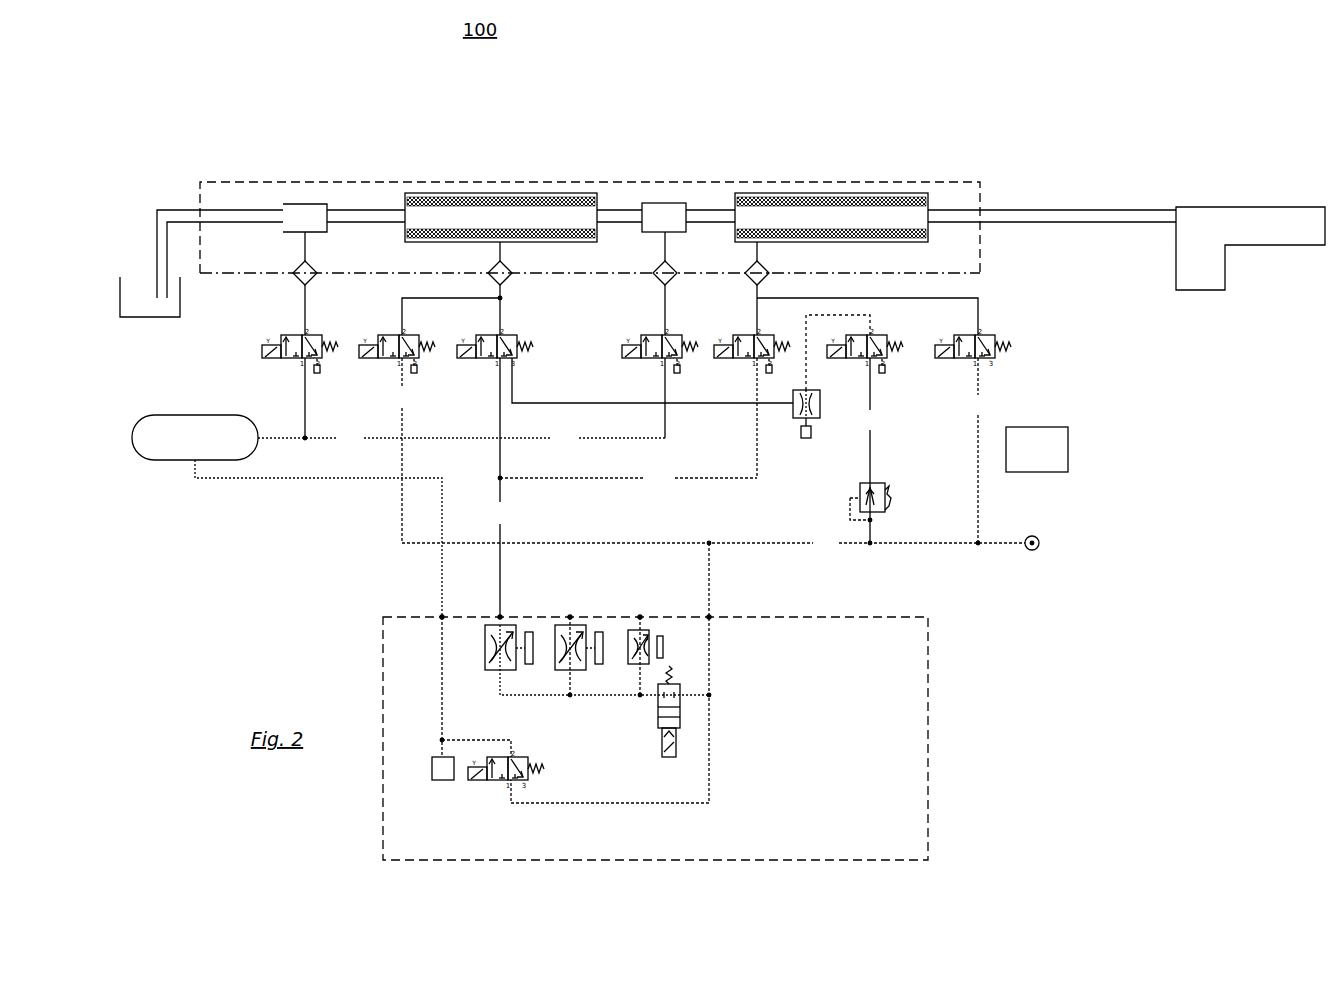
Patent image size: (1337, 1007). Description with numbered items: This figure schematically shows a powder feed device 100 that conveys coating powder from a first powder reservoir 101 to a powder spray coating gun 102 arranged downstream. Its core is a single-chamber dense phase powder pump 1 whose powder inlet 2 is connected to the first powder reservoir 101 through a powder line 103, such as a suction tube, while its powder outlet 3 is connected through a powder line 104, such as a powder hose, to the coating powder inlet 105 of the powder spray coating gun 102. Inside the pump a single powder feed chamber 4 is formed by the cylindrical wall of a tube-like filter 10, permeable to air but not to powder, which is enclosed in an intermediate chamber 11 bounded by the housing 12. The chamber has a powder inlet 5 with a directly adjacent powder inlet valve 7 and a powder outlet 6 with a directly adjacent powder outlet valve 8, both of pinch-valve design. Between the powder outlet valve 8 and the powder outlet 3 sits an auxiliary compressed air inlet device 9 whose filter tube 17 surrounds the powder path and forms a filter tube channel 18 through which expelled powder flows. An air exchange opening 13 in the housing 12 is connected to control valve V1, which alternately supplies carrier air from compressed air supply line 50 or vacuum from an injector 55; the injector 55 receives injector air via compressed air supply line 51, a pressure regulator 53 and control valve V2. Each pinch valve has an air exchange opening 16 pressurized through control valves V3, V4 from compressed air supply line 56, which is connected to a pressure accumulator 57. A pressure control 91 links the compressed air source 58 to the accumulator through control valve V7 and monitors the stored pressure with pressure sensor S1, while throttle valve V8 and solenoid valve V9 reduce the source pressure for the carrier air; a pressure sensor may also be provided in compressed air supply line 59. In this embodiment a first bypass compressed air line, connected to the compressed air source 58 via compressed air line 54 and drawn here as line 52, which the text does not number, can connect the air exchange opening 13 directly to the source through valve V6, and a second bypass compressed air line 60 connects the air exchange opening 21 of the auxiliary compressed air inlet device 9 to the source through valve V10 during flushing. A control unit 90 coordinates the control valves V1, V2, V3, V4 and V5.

The powder feed device 100 is at (590, 227).
The dense phase powder pump 1 is at (237, 182).
The powder inlet 2 is at (196, 210).
The powder line 103 is at (153, 232).
The first powder reservoir 101 is at (137, 293).
The powder inlet valve 7 is at (305, 205).
The powder inlet 5 is at (396, 212).
The intermediate chamber 11 is at (478, 175).
The housing 12 is at (482, 194).
The powder feed chamber 4 is at (478, 157).
The tube-like filter 10 is at (540, 200).
The powder outlet 6 is at (607, 210).
The powder outlet valve 8 is at (672, 205).
The auxiliary compressed air inlet device 9 is at (831, 175).
The filter tube channel 18 is at (803, 217).
The filter tube 17 is at (847, 200).
The powder outlet 3 is at (985, 212).
The powder line 104 is at (1031, 220).
The coating powder inlet 105 is at (1178, 213).
The powder spray coating gun 102 is at (1215, 222).
The air exchange opening 16 is at (302, 232).
The air exchange opening 13 is at (500, 245).
The air exchange opening 21 is at (757, 246).
The pressure accumulator 57 is at (287, 516).
The compressed air supply line 56 is at (461, 403).
The supply line 52 is at (402, 450).
The compressed air supply line 50 is at (500, 487).
The compressed air supply line 59 is at (628, 423).
The injector 55 is at (675, 400).
The compressed air supply line 51 is at (871, 450).
The pressure regulator 53 is at (886, 502).
The second bypass compressed air line 60 is at (980, 450).
The compressed air line 54 is at (713, 543).
The control unit 90 is at (1046, 462).
The compressed air source 58 is at (1040, 548).
The pressure control 91 is at (709, 701).
The control valve V1 is at (495, 340).
The control valve V2 is at (854, 351).
The control valve V3 is at (300, 342).
The control valve V4 is at (660, 342).
The control valve V5 is at (752, 342).
The valve V6 is at (397, 342).
The control valve V7 is at (506, 761).
The throttle valve V8 is at (495, 647).
The solenoid valve V9 is at (653, 711).
The valve V10 is at (979, 340).
The pressure sensor S1 is at (443, 782).